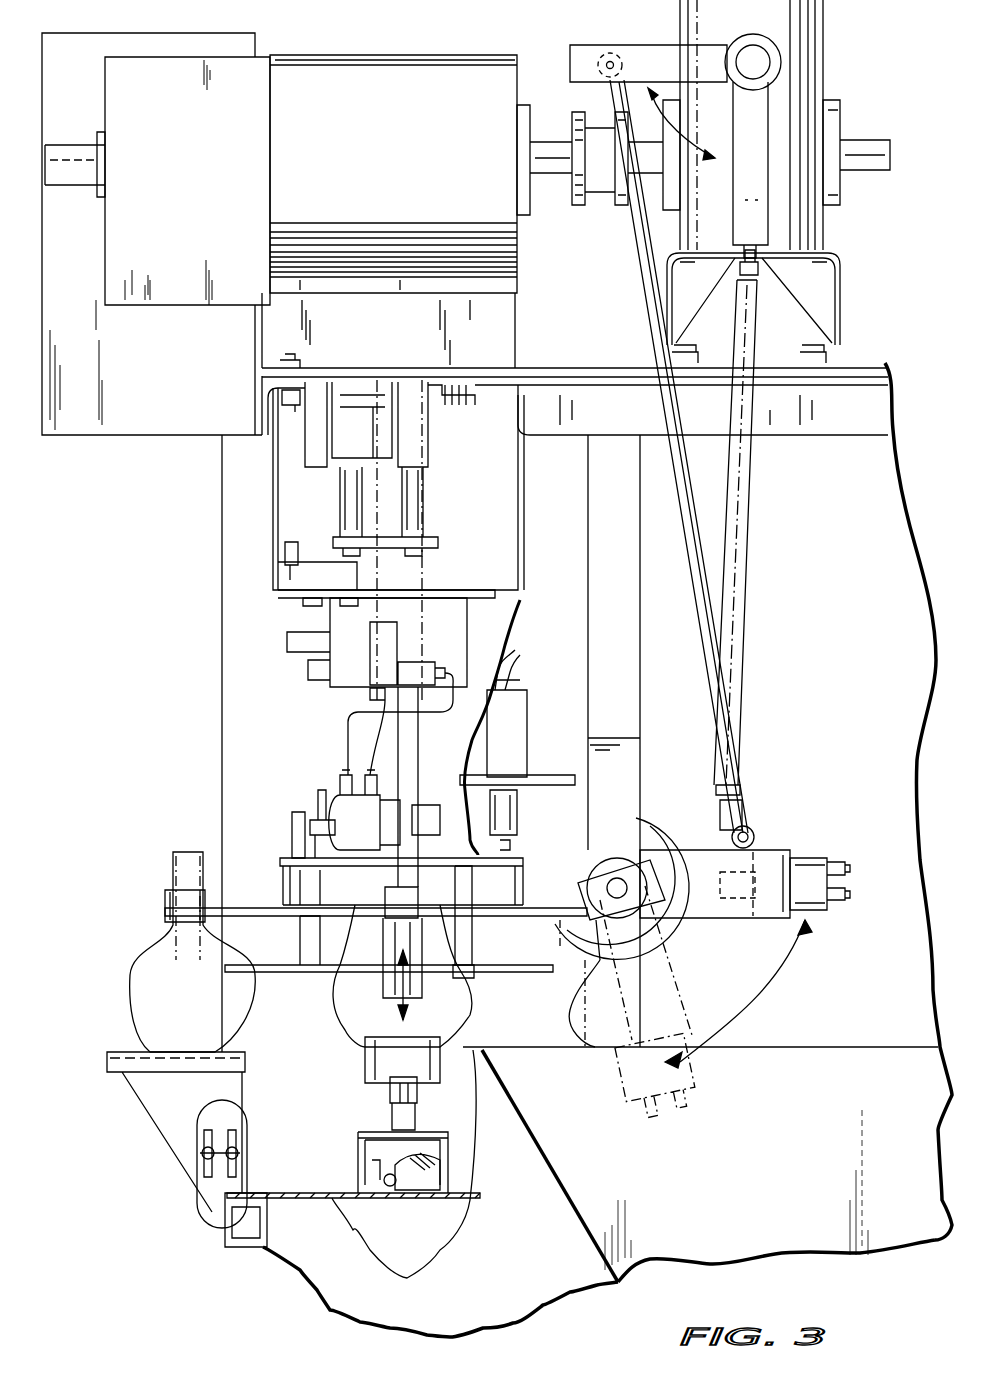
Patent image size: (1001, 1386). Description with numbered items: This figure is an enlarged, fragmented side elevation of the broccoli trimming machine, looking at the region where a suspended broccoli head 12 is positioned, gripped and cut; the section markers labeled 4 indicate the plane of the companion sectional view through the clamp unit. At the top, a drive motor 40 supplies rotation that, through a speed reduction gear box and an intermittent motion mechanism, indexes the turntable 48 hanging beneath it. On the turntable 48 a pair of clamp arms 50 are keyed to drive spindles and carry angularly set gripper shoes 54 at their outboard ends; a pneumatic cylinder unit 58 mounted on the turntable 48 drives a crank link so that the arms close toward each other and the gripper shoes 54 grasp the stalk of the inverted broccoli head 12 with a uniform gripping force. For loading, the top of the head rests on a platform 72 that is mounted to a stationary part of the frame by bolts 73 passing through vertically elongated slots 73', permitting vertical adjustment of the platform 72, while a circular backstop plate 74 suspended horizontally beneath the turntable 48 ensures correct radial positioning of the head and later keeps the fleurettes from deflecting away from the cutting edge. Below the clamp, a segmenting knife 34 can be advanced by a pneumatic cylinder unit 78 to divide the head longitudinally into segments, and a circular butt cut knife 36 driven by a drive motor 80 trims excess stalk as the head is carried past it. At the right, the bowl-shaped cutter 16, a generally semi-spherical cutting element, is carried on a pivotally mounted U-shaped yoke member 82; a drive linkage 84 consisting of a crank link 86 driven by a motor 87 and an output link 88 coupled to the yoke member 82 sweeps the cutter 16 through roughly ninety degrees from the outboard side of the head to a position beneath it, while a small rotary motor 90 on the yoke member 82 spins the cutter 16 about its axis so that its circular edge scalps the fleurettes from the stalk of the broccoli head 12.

The section line 4- 4 is at (563, 893).
The broccoli head 12 is at (155, 975).
The bowl-shaped cutter 16 is at (660, 825).
The segmenting knife 34 is at (368, 1083).
The butt cut knife 36 is at (554, 785).
The drive motor 40 is at (230, 122).
The turntable 48 is at (490, 867).
The clamp arms 50 is at (272, 918).
The gripper shoes 54 is at (160, 886).
The pneumatic cylinder unit 58 is at (335, 800).
The platform 72 is at (118, 1052).
The bolts 73 is at (254, 1164).
The vertically elongated slots 73' is at (168, 1167).
The circular backstop plate 74 is at (272, 975).
The pneumatic cylinder unit 78 is at (448, 1148).
The drive motor 80 is at (505, 718).
The U-shaped yoke member 82 is at (775, 850).
The drive linkage 84 is at (752, 745).
The crank link 86 is at (655, 45).
The motor 87 is at (800, 52).
The output link 88 is at (700, 590).
The rotary motor 90 is at (810, 860).